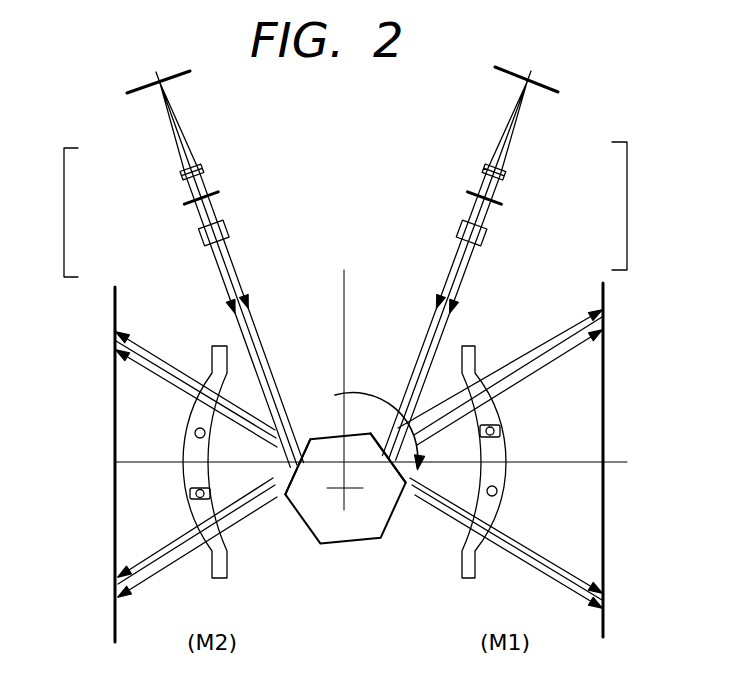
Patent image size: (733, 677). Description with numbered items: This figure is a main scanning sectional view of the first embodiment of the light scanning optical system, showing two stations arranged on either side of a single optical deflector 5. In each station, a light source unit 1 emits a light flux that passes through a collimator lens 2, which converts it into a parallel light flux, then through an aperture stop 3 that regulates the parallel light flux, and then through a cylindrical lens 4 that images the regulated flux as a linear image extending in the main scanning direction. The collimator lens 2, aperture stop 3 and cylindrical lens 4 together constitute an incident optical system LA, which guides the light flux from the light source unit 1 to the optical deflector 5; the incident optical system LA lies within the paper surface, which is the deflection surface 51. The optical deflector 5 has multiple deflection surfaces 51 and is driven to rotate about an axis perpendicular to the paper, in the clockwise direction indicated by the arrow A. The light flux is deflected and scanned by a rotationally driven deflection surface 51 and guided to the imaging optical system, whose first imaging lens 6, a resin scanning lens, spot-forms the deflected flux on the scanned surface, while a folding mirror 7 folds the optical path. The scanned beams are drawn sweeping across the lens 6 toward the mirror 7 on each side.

The light source unit 1 is at (142, 85).
The collimator lens 2 is at (182, 171).
The aperture stop 3 is at (183, 205).
The cylindrical lens 4 is at (204, 236).
The optical deflector 5 is at (327, 427).
The deflection surface 51 is at (283, 476).
The first imaging lens 6 is at (198, 403).
The folding mirror 7 is at (115, 507).
The arrow indicating rotational direction A is at (385, 394).
The incident optical system LA is at (346, 209).